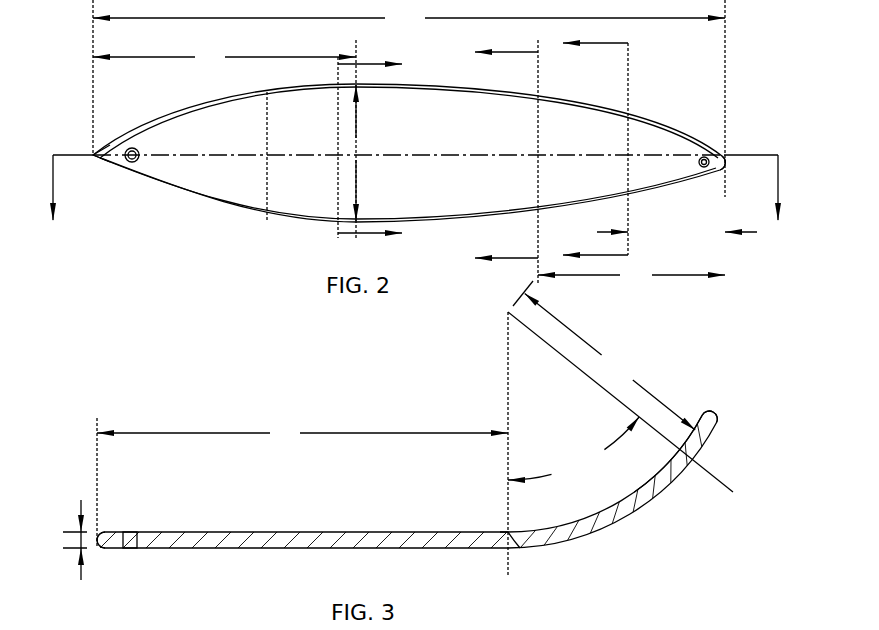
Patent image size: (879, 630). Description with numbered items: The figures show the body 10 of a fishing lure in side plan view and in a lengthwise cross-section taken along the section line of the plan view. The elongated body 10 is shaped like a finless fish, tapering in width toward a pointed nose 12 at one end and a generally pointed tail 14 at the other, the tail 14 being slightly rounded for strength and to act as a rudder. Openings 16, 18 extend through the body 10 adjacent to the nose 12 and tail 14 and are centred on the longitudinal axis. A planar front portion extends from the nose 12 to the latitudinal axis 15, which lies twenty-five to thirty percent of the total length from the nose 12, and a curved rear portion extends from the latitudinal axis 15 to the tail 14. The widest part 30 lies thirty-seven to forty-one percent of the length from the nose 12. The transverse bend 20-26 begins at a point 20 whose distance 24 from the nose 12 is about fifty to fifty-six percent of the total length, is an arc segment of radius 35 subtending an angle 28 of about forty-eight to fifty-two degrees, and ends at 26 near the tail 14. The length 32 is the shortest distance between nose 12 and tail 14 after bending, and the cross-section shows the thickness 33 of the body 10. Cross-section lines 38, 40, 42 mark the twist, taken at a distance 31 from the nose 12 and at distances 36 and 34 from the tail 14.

In FIG. 2, the body 10 is at (371, 261).
In FIG. 3, the body 10 is at (374, 586).
In FIG. 2, the nose 12 is at (92, 153).
In FIG. 3, the nose 12 is at (99, 549).
In FIG. 2, the tail 14 is at (728, 154).
In FIG. 3, the tail 14 is at (719, 417).
In FIG. 2, the latitudinal axis 15 is at (267, 222).
In FIG. 2, the opening 16 is at (131, 147).
In FIG. 3, the opening 16 is at (140, 532).
In FIG. 2, the opening 18 is at (703, 156).
In FIG. 3, the point 20 is at (507, 530).
In FIG. 3, the distance 24 is at (302, 433).
In FIG. 3, the end of bend 26 is at (677, 452).
In FIG. 3, the angle 28 is at (620, 402).
In FIG. 2, the widest part 30 is at (356, 153).
In FIG. 2, the distance 31 is at (224, 57).
In FIG. 2, the length 32 is at (409, 18).
In FIG. 3, the thickness 33 is at (59, 540).
In FIG. 2, the distance 34 is at (677, 232).
In FIG. 3, the radius 35 is at (604, 355).
In FIG. 2, the distance 36 is at (631, 275).
In FIG. 2, the cross-section line 38- 38 is at (379, 149).
In FIG. 2, the cross-section line 40- 40 is at (493, 153).
In FIG. 2, the cross-section line 42- 42 is at (583, 147).